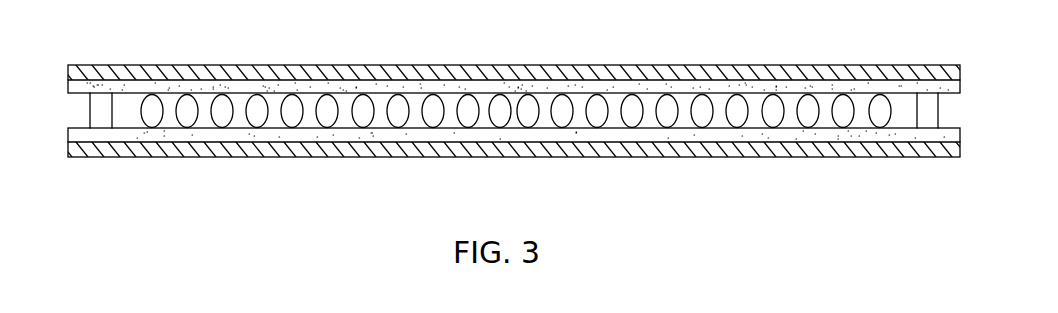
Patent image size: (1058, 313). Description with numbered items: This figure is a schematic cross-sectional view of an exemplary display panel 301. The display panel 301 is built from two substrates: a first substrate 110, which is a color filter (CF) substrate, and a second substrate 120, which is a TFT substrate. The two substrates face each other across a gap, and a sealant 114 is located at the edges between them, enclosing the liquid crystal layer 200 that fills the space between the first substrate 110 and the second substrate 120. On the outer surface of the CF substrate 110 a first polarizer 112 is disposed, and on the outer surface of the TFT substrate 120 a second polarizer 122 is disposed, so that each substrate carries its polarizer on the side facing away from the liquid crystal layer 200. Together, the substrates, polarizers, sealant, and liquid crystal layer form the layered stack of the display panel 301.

The first substrate 110 is at (110, 83).
The first polarizer 112 is at (142, 77).
The sealant 114 is at (101, 117).
The second substrate 120 is at (91, 150).
The second polarizer 122 is at (118, 141).
The liquid crystal layer 200 is at (327, 104).
The display panel 301 is at (790, 58).